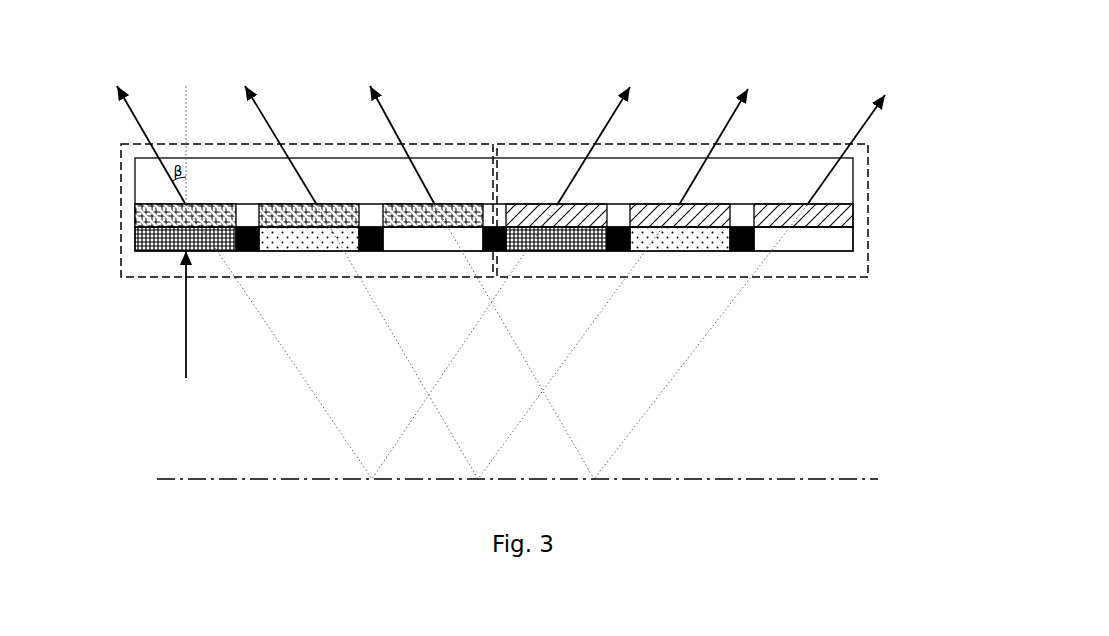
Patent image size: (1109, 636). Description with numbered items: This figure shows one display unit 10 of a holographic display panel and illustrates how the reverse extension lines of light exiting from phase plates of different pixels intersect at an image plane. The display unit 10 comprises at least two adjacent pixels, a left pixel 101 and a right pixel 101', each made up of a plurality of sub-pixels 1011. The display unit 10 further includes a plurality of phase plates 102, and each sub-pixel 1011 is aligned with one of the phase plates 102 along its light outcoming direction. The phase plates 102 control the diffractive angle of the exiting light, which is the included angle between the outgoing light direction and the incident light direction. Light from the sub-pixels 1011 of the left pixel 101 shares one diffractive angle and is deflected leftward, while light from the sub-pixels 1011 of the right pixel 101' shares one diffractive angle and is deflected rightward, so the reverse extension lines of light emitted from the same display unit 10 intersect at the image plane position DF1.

The display unit 10 is at (527, 176).
The pixel 101 is at (307, 176).
The right pixel 101' is at (682, 176).
The phase plate 102 is at (844, 210).
The sub-pixel 1011 is at (556, 253).
The image plane position DF1 is at (494, 478).